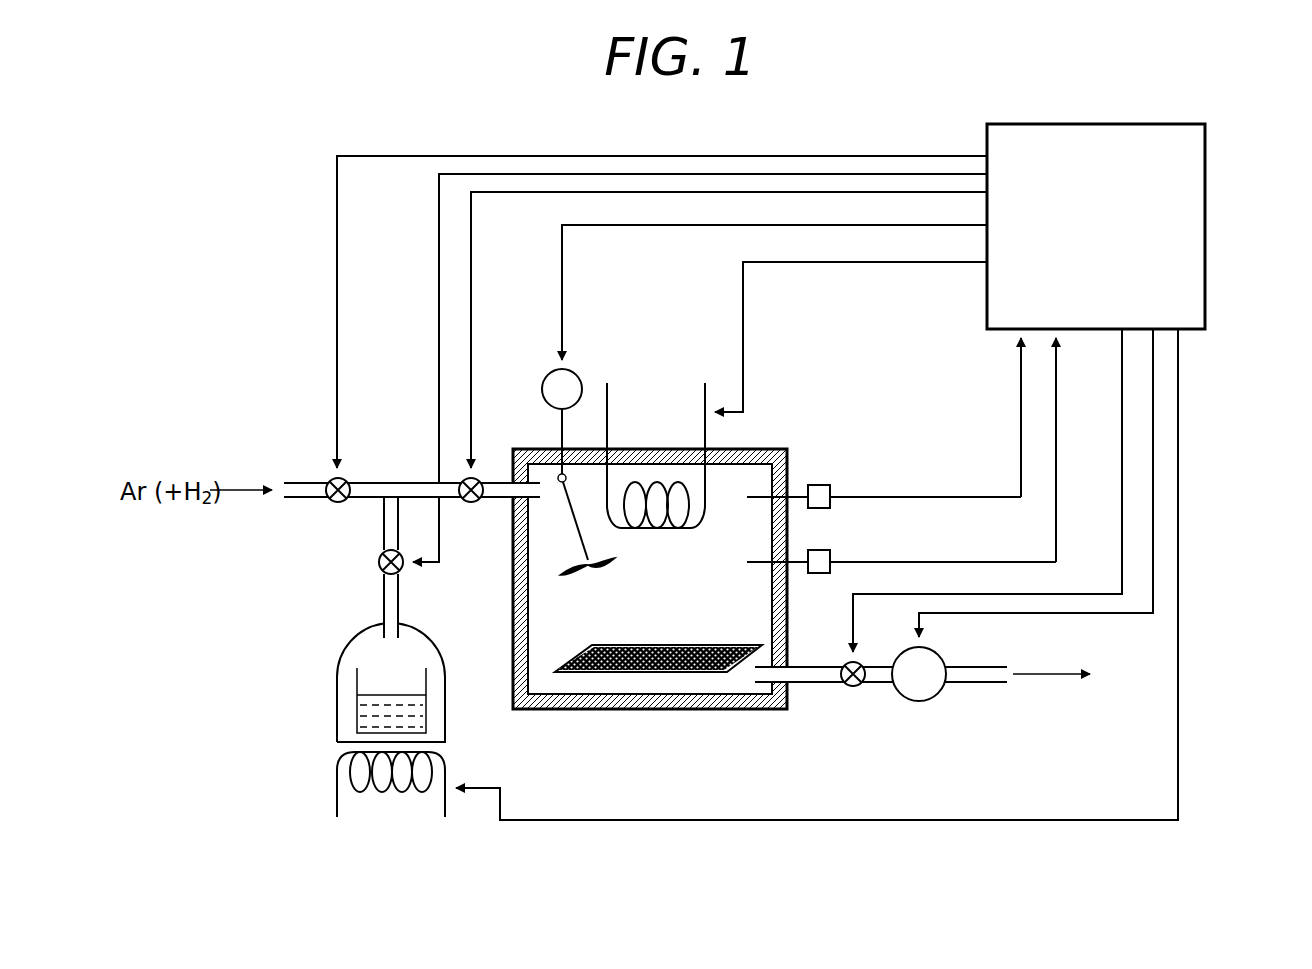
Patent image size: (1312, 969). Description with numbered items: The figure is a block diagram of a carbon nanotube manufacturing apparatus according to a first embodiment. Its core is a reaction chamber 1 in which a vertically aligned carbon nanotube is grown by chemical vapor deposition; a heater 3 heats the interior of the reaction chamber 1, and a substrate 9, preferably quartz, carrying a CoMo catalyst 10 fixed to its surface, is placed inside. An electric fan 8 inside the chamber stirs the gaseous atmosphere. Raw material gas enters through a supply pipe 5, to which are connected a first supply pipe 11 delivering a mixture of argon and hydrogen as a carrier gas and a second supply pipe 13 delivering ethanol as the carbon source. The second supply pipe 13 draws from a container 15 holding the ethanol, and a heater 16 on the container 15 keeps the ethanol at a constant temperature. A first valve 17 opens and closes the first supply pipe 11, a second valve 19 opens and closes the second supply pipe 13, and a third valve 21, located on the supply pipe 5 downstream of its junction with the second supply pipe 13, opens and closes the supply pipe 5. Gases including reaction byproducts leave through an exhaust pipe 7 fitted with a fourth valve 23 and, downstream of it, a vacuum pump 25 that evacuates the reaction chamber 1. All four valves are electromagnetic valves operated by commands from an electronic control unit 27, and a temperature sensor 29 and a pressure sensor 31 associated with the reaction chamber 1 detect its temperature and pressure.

The reaction chamber 1 is at (760, 450).
The heater 3 is at (607, 410).
The supply pipe 5 is at (500, 480).
The exhaust pipe 7 is at (815, 666).
The electric fan 8 is at (577, 534).
The substrate 9 is at (650, 673).
The catalyst 10 is at (620, 645).
The first supply pipe 11 is at (303, 482).
The second supply pipe 13 is at (384, 523).
The container 15 is at (337, 684).
The heater 16 is at (337, 787).
The first valve 17 is at (350, 480).
The second valve 19 is at (380, 567).
The third valve 21 is at (471, 503).
The fourth valve 23 is at (850, 687).
The vacuum pump 25 is at (919, 702).
The electronic control unit 27 is at (1205, 183).
The temperature sensor 29 is at (831, 487).
The pressure sensor 31 is at (831, 552).